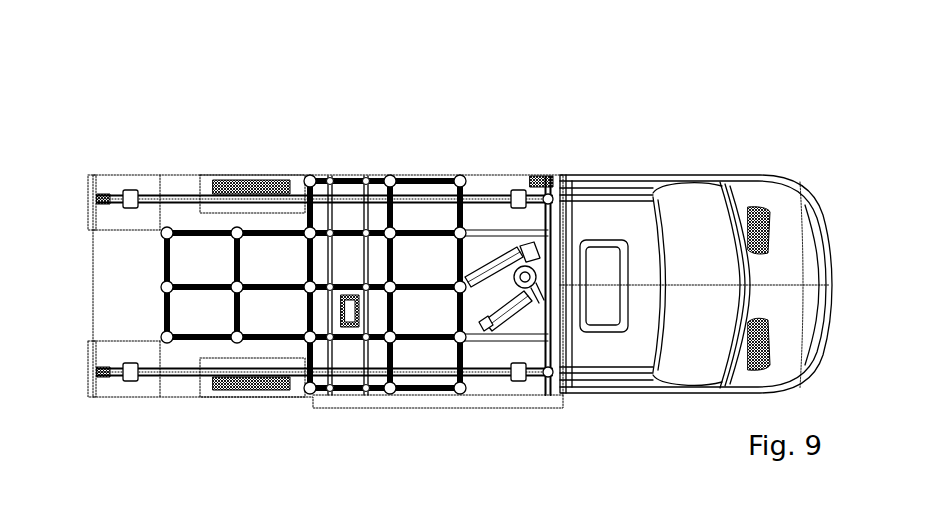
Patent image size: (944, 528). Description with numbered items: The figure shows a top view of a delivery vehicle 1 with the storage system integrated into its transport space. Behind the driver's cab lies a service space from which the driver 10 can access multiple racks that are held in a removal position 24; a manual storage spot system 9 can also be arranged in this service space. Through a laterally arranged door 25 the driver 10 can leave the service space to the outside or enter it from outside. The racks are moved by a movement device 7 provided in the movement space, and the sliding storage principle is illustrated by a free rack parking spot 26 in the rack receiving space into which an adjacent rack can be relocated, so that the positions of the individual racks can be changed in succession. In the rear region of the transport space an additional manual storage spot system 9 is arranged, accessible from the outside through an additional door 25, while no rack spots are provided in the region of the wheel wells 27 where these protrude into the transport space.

The vehicle 1 is at (650, 115).
The movement device 7 is at (352, 350).
The manual storage spot system 9 is at (505, 210).
The driver 10 is at (532, 262).
The removal position 24 is at (435, 365).
The door 25 is at (86, 362).
The free rack parking spot 26 is at (347, 257).
The wheel wells 27 is at (262, 388).